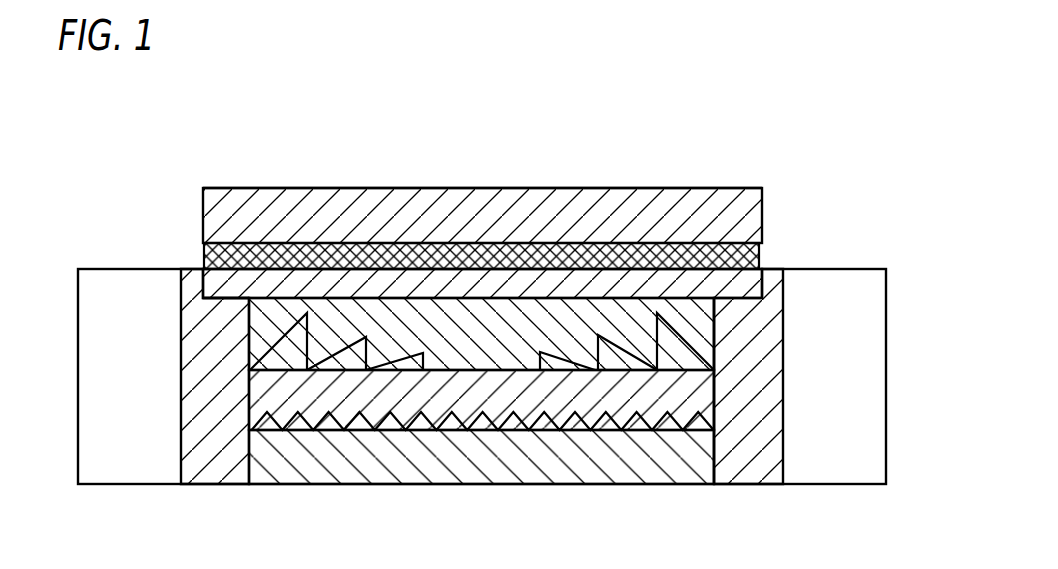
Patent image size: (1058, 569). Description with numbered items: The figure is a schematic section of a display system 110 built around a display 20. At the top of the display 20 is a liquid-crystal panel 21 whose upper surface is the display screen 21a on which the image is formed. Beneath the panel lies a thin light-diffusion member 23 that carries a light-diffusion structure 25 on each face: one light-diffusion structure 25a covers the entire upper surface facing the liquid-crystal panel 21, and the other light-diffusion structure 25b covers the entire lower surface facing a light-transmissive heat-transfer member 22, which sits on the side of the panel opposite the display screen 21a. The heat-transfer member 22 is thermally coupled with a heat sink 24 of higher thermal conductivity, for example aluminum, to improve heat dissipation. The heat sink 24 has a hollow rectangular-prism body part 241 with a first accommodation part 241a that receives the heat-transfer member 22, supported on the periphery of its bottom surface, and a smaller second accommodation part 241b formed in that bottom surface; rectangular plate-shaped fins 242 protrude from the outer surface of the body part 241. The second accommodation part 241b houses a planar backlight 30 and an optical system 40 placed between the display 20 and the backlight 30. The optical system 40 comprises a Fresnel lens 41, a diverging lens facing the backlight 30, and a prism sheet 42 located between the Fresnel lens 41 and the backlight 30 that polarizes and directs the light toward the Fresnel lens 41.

The display system 110 is at (150, 140).
The display 20 is at (774, 124).
The liquid-crystal panel 21 is at (741, 192).
The display screen 21a is at (390, 187).
The light-diffusion member 23 is at (758, 250).
The light-diffusion structure 25 is at (481, 207).
The light-diffusion structure 25a is at (620, 244).
The light-diffusion structure 25b is at (435, 267).
The heat-transfer member 22 is at (748, 287).
The heat sink 24 is at (774, 312).
The body part 241 is at (742, 447).
The first accommodation part 241a is at (203, 287).
The second accommodation part 241b is at (712, 468).
The fins 242 is at (848, 386).
The optical system 40 is at (135, 340).
The Fresnel lens 41 is at (255, 341).
The prism sheet 42 is at (257, 402).
The backlight 30 is at (382, 478).